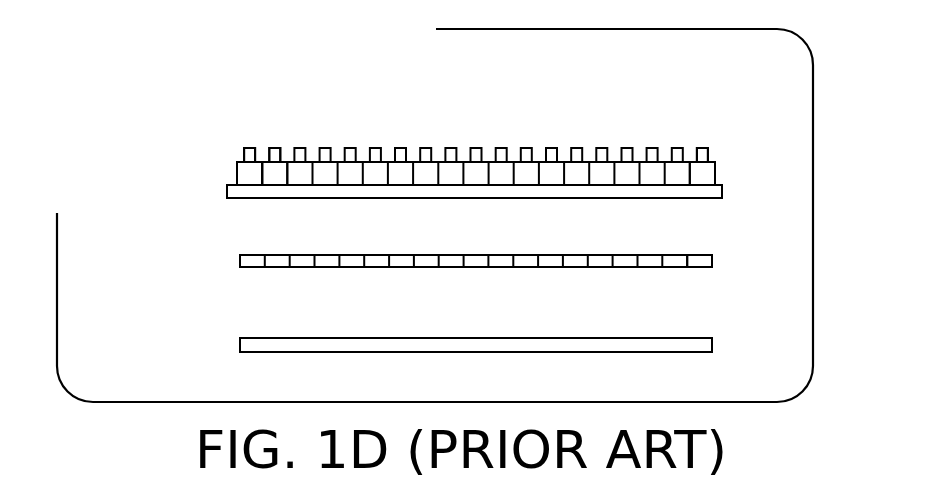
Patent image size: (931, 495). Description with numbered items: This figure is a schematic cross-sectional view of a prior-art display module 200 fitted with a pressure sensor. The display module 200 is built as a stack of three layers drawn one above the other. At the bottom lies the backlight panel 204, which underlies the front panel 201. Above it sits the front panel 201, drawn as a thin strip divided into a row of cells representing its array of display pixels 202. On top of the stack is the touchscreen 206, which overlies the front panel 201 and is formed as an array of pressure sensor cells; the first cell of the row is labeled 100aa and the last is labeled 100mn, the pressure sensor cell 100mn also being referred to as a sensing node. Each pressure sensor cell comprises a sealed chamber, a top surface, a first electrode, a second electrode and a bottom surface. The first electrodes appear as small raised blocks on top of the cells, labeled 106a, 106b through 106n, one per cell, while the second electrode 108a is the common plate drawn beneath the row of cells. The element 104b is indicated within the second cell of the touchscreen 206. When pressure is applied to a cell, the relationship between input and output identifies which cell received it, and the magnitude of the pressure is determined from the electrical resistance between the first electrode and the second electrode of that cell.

The display module 200 is at (515, 100).
The touchscreen 206 is at (226, 175).
The first electrode 106a is at (258, 148).
The first electrode 106b is at (277, 149).
The first electrode 106n is at (703, 149).
The sensing electrode 104b is at (284, 167).
The pressure sensor cell 100aa is at (250, 177).
The pressure sensor cell 100mn is at (714, 170).
The second electrode 108a is at (722, 195).
The front panel 201 is at (238, 261).
The display pixels 202 is at (701, 261).
The backlight panel 204 is at (236, 347).